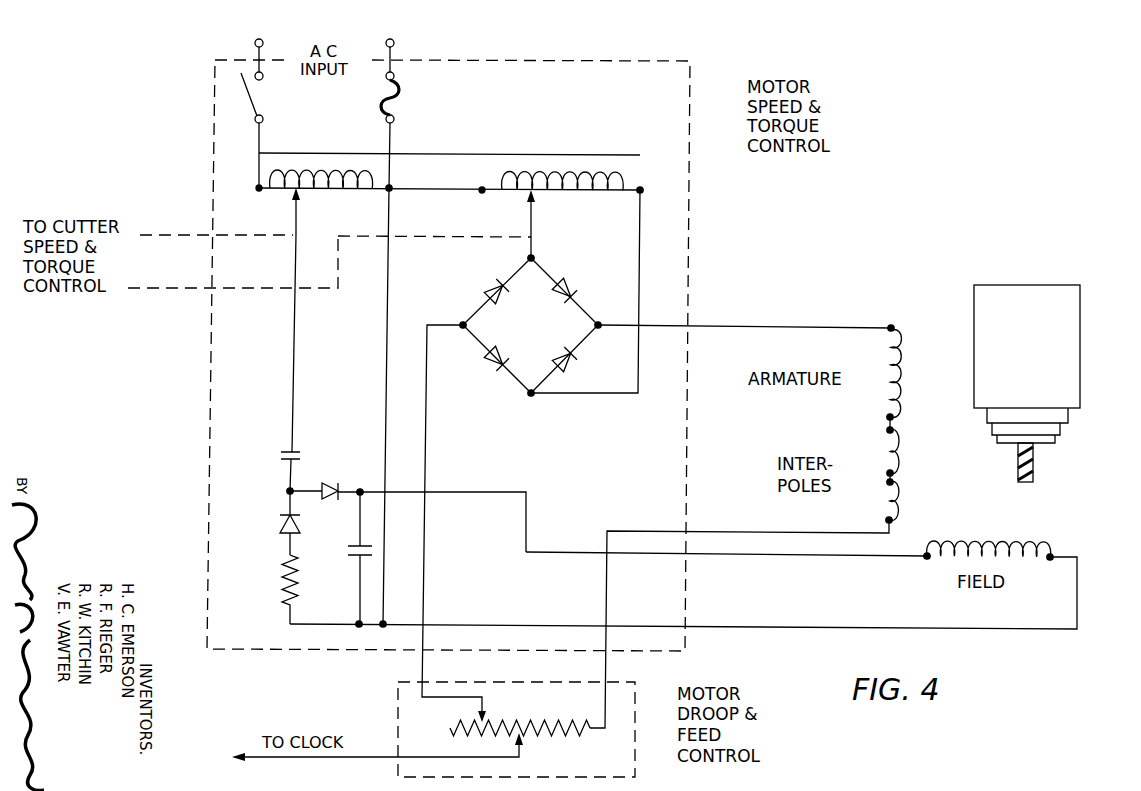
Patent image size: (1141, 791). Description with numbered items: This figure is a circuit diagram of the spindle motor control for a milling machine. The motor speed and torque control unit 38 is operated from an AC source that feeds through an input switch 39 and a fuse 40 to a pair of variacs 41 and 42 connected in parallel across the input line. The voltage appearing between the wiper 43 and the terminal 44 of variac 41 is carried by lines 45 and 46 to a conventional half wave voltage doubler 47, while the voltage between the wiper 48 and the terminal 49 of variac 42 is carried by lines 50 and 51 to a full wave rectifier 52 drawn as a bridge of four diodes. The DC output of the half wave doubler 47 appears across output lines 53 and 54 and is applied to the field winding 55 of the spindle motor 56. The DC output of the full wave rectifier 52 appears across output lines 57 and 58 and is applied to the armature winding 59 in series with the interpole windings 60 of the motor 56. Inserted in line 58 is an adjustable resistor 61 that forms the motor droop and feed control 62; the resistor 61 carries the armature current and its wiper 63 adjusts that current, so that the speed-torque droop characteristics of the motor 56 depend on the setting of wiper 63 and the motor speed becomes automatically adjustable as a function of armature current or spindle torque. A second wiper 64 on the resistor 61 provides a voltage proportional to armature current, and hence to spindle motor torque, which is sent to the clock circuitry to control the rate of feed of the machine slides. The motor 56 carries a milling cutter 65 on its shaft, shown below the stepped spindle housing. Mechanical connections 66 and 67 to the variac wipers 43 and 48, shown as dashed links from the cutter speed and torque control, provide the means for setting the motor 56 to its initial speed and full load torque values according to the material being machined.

The motor speed and torque control unit 38 is at (691, 113).
The input switch 39 is at (250, 96).
The fuse 40 is at (393, 105).
The variac 41 is at (334, 191).
The variac 42 is at (572, 191).
The wiper 43 is at (297, 207).
The terminal 44 is at (407, 199).
The line 45 is at (294, 397).
The line 46 is at (385, 338).
The half wave voltage doubler 47 is at (321, 466).
The wiper 48 is at (531, 208).
The terminal 49 is at (643, 191).
The line 50 is at (531, 245).
The line 51 is at (638, 258).
The full wave rectifier 52 is at (488, 273).
The output line 53 is at (750, 557).
The output line 54 is at (760, 628).
The field winding 55 is at (1010, 563).
The spindle motor 56 is at (1080, 368).
The output line 57 is at (700, 328).
The output line 58 is at (656, 531).
The armature winding 59 is at (897, 394).
The interpole windings 60 is at (895, 443).
The adjustable resistor 61 is at (530, 723).
The motor droop and feed control 62 is at (636, 715).
The wiper 63 is at (485, 704).
The second wiper 64 is at (522, 748).
The milling cutter 65 is at (1035, 456).
The mechanical connection 66 is at (222, 238).
The mechanical connection 67 is at (222, 290).